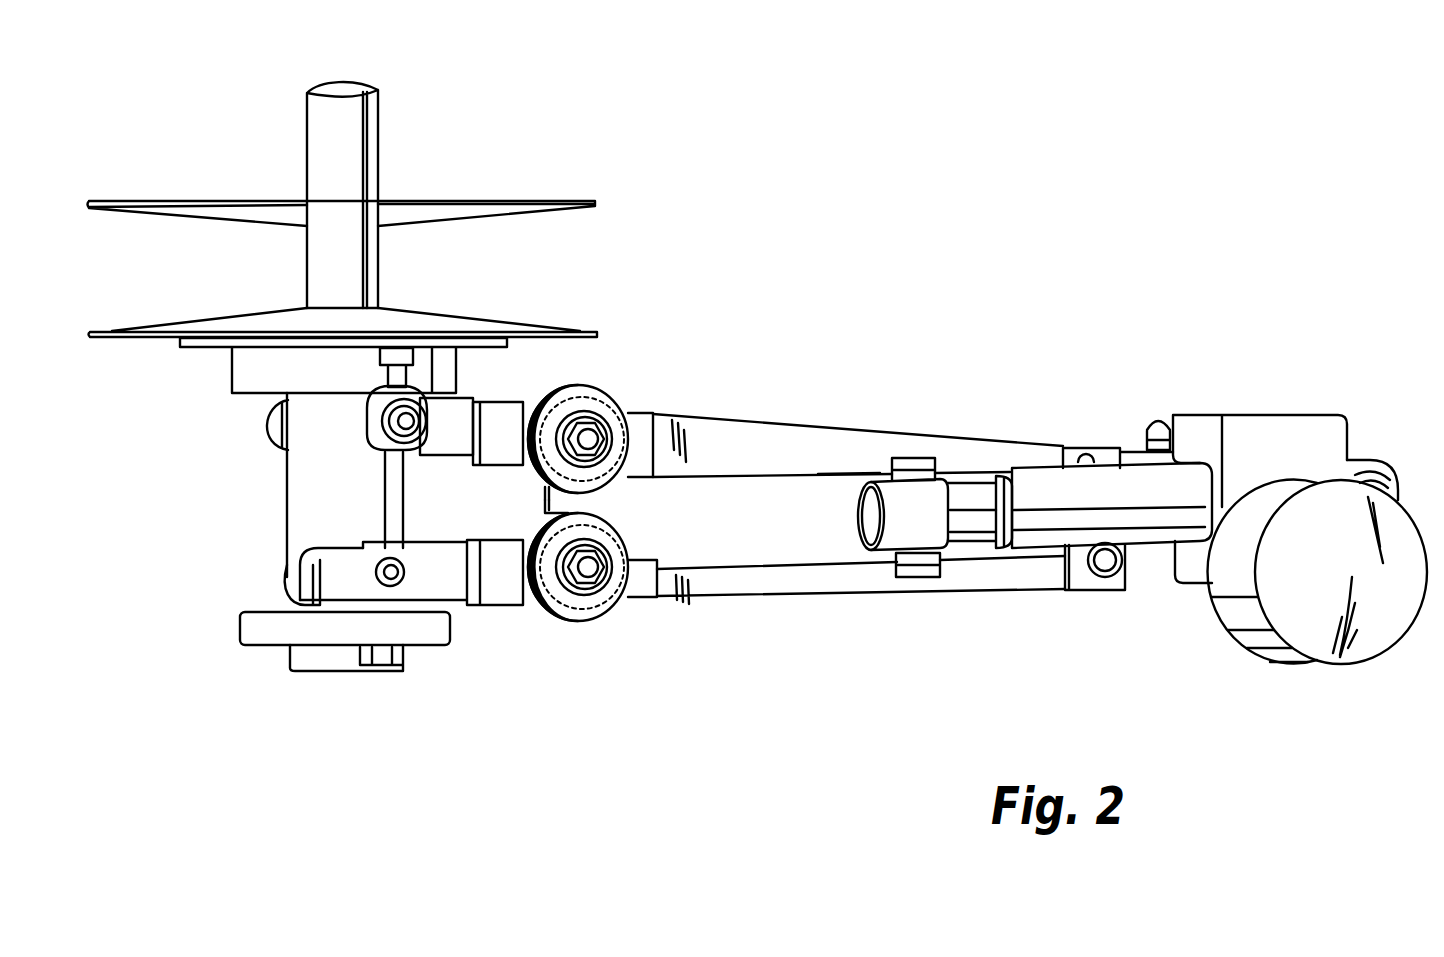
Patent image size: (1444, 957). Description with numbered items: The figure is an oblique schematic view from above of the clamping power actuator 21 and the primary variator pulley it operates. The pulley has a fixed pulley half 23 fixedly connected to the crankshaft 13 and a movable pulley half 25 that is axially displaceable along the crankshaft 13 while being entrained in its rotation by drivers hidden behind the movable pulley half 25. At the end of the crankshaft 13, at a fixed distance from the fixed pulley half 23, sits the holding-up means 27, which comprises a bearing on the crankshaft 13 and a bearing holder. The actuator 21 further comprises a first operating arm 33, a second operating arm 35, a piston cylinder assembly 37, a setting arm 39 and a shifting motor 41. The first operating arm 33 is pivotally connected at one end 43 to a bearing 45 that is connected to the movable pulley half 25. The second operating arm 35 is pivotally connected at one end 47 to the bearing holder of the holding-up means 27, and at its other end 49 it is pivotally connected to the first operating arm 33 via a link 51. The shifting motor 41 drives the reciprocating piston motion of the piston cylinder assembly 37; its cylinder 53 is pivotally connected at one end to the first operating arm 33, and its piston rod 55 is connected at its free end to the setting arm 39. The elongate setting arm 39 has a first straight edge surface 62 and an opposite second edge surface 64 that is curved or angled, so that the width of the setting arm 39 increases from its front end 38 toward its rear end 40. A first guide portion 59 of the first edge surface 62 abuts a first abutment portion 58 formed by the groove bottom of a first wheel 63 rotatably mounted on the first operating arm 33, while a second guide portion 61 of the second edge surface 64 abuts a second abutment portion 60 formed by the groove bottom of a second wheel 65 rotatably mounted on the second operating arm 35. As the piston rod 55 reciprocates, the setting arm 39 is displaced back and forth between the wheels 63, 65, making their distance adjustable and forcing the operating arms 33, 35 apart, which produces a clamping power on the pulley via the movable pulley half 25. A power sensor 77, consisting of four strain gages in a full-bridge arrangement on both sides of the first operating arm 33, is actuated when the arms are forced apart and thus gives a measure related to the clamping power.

The crankshaft 13 is at (362, 140).
The fixed pulley half 23 is at (421, 211).
The movable pulley half 25 is at (420, 317).
The bearing 45 is at (207, 347).
The one end of the first operating arm 43 is at (373, 433).
The one end of the second operating arm 47 is at (290, 582).
The holding-up means 27 is at (448, 628).
The power sensor 77 is at (520, 402).
The first wheel 63 is at (636, 401).
The first straight edge surface 62 is at (653, 405).
The first guide portion 59 is at (625, 484).
The front end of the setting arm 38 is at (540, 492).
The first abutment portion 58 is at (545, 500).
The second wheel 65 is at (632, 613).
The second guide portion 61 is at (620, 597).
The second abutment portion 60 is at (628, 530).
The second edge surface 64 is at (643, 595).
The first operating arm 33 is at (741, 408).
The second operating arm 35 is at (682, 609).
The setting arm 39 is at (820, 487).
The rear end of the setting arm 40 is at (960, 500).
The clamping power actuator 21 is at (756, 487).
The piston rod 55 is at (973, 522).
The piston cylinder assembly 37 is at (989, 525).
The cylinder 53 is at (1048, 522).
The link 51 is at (1080, 455).
The other end of the second operating arm 49 is at (1117, 583).
The shifting motor 41 is at (1318, 522).